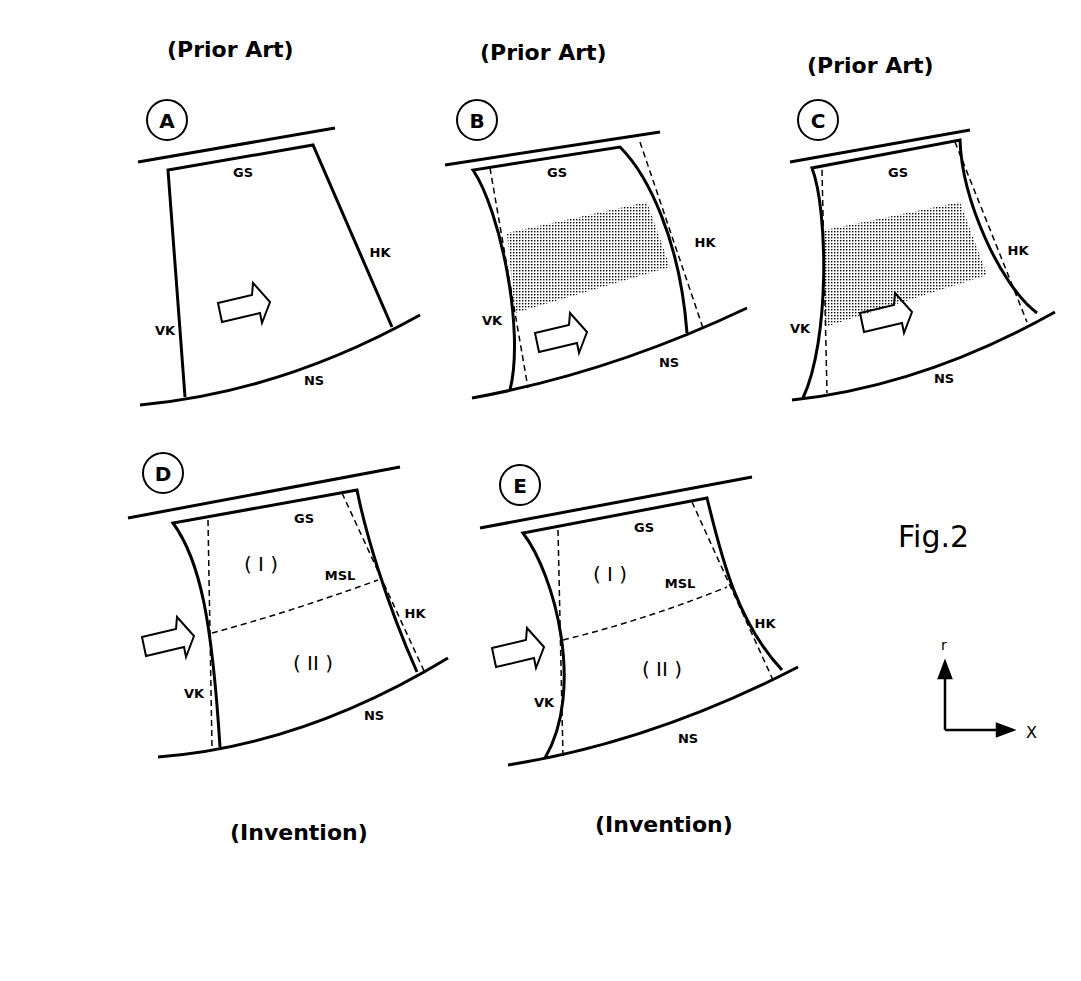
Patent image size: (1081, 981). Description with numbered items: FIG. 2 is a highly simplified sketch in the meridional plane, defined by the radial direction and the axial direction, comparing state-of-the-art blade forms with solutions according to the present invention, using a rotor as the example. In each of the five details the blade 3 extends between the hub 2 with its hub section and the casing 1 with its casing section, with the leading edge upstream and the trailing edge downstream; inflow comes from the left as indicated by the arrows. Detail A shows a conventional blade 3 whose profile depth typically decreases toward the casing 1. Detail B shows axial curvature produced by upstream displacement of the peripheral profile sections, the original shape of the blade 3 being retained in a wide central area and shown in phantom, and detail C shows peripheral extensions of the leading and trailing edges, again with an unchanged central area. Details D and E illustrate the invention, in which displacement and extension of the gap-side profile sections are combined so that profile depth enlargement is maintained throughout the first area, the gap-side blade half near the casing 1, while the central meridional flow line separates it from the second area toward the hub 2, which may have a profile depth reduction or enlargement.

The casing 1 is at (549, 312).
The hub 2 is at (597, 536).
The blade 3 is at (602, 449).